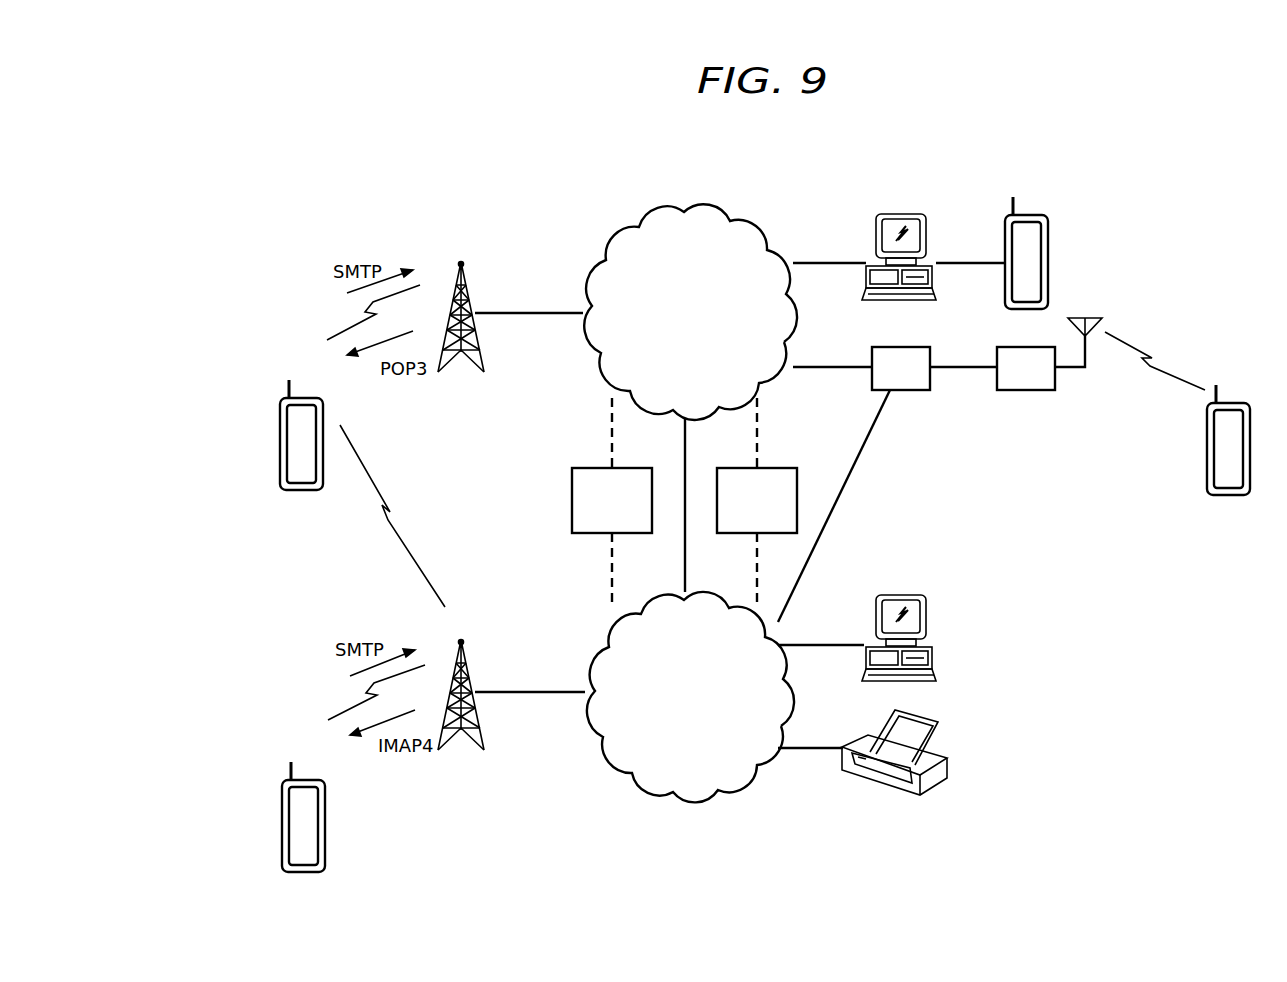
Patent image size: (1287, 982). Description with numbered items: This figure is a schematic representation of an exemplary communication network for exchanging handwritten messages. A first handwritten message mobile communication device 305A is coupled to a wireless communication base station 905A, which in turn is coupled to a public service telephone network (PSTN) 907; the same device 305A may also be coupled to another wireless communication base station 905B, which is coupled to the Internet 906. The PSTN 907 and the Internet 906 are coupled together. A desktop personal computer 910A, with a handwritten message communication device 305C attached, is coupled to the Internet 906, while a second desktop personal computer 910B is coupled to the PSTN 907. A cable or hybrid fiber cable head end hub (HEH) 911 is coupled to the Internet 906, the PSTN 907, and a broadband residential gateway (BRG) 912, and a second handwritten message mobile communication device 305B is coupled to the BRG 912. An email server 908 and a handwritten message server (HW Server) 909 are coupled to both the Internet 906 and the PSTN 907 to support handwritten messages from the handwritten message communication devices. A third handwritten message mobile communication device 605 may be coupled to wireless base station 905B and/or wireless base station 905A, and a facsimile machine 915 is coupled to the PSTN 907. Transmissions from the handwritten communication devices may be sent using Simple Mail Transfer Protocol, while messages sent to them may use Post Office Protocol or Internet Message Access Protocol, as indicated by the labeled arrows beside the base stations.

The Internet 906 is at (683, 205).
The public service telephone network 907 is at (683, 805).
The wireless communication base station 905A is at (462, 638).
The wireless communication base station 905B is at (462, 262).
The third handwritten message mobile communication device 605 is at (280, 440).
The first handwritten message mobile communication device 305A is at (282, 822).
The second handwritten message mobile communication device 305B is at (1228, 403).
The handwritten message communication device 305C is at (1030, 215).
The email server 908 is at (579, 468).
The handwritten message server 909 is at (788, 468).
The desk top personal computer 910A is at (900, 214).
The desk top personal computer 910B is at (936, 657).
The cable or hybrid fiber cable head end hub 911 is at (912, 390).
The broadband residential gateway 912 is at (1017, 390).
The facsimile machine 915 is at (948, 764).